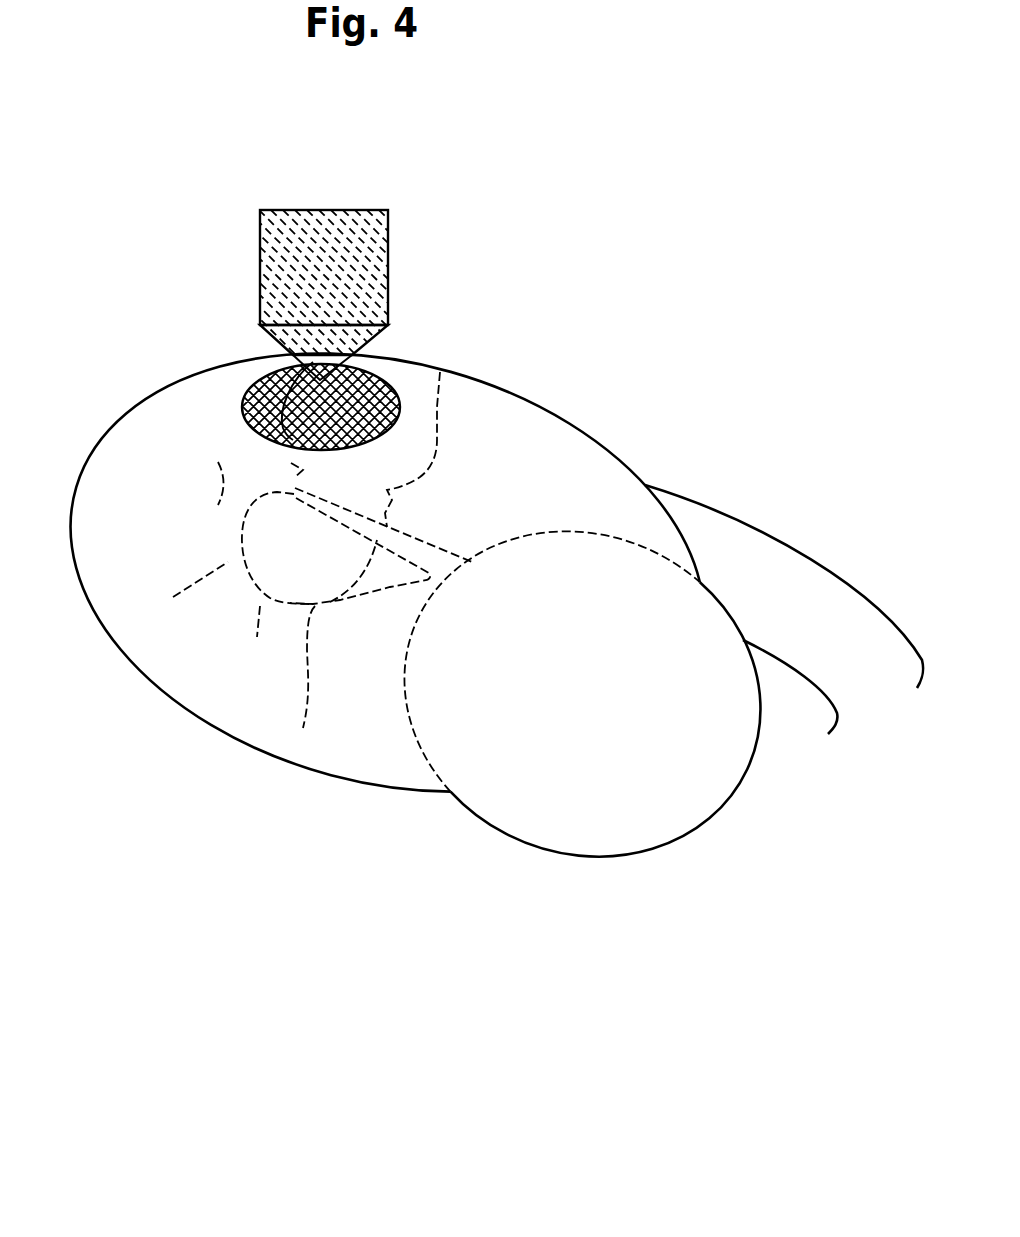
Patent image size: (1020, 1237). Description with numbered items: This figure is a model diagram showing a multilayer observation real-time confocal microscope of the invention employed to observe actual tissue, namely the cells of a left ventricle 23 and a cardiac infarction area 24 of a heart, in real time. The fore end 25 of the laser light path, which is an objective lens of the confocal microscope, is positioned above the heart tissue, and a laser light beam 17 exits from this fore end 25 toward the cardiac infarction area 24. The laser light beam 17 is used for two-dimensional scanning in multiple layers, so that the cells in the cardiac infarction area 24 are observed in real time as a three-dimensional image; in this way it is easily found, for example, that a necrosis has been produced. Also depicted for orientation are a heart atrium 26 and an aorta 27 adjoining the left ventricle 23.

The laser light beam 17 is at (293, 357).
The left ventricle 23 is at (155, 683).
The cardiac infarction area 24 is at (384, 400).
The fore end of a laser light path 25 is at (260, 248).
The heart atrium 26 is at (568, 857).
The aorta 27 is at (797, 548).